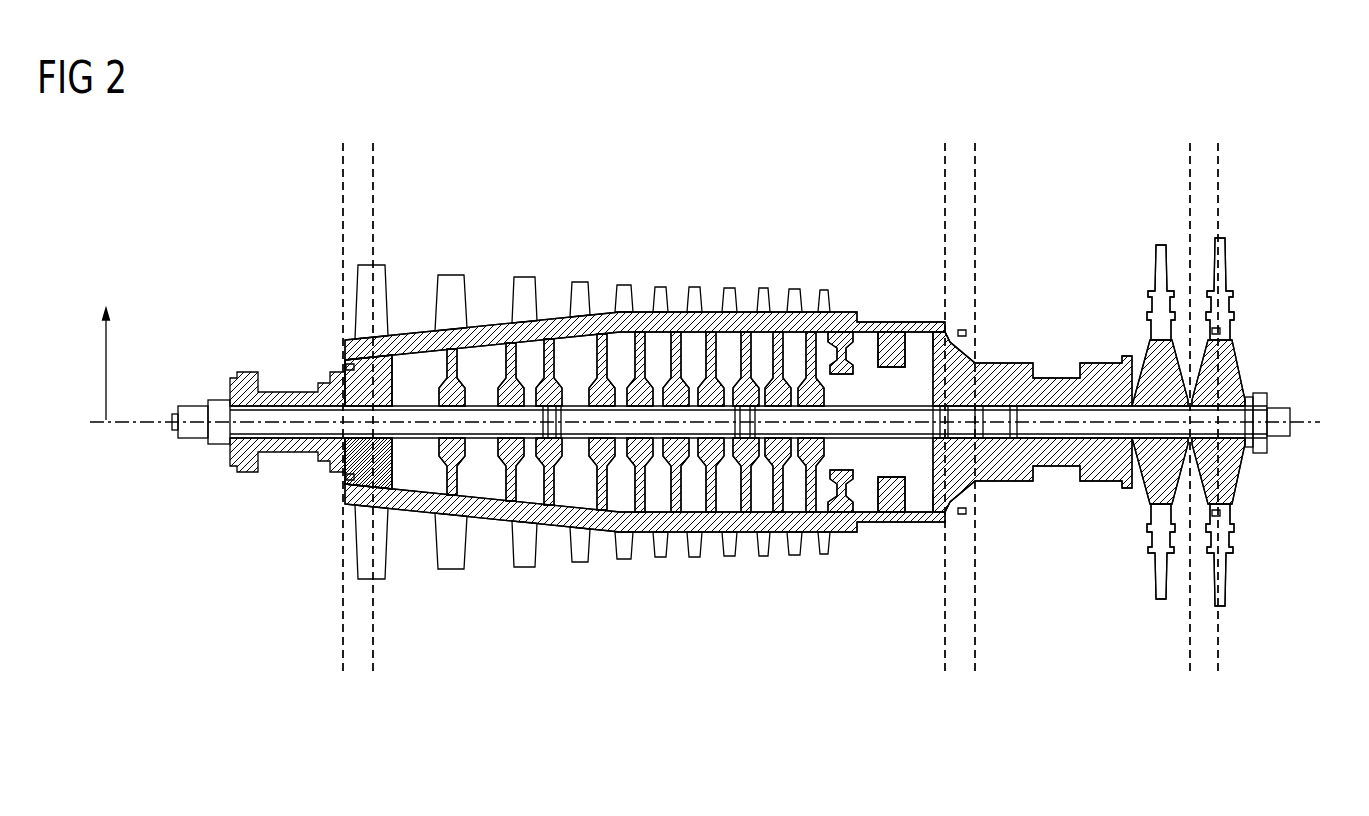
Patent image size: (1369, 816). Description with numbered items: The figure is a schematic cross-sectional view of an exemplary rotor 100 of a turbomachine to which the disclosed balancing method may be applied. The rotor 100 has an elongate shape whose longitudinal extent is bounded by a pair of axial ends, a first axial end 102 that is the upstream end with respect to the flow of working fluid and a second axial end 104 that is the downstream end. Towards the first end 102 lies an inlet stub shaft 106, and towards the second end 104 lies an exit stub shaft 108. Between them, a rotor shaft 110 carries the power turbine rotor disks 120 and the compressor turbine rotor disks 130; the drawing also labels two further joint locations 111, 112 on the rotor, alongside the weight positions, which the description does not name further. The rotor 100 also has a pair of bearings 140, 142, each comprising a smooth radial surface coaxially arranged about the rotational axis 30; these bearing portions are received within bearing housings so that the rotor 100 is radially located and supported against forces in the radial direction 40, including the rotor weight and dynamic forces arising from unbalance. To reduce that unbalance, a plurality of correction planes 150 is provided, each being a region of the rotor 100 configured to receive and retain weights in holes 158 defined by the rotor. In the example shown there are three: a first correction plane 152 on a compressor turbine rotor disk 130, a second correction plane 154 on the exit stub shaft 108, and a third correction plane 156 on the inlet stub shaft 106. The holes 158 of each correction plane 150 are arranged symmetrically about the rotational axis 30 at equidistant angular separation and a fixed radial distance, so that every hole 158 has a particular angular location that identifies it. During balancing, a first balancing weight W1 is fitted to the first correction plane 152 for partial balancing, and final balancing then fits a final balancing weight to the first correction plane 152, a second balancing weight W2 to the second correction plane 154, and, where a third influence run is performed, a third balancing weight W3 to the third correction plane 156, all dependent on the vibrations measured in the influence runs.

The rotational axis 30 is at (148, 432).
The radial direction 40 is at (104, 358).
The rotor 100 is at (233, 180).
The first axial end 102 is at (172, 418).
The second axial end 104 is at (1293, 430).
The inlet stub shaft 106 is at (318, 495).
The exit stub shaft 108 is at (986, 498).
The rotor shaft 110 is at (196, 390).
The second joint 111 is at (902, 387).
The third joint 112 is at (313, 384).
The power turbine rotor disks 120 is at (692, 300).
The compressor turbine rotor disks 130 is at (1250, 368).
The bearing 140 is at (283, 455).
The bearing 142 is at (1057, 465).
The correction planes 150 is at (362, 682).
The first correction plane 152 is at (1203, 135).
The second correction plane 154 is at (958, 135).
The third correction plane 156 is at (358, 135).
The holes 158 is at (350, 368).
The first balancing weight W1 is at (1153, 338).
The second balancing weight W2 is at (945, 333).
The third balancing weight W3 is at (345, 355).